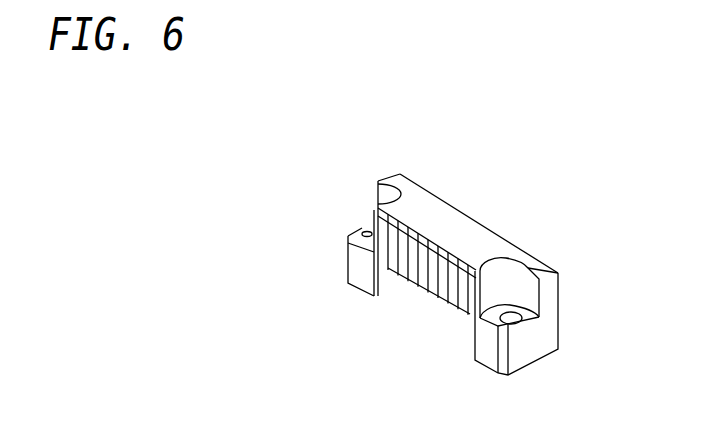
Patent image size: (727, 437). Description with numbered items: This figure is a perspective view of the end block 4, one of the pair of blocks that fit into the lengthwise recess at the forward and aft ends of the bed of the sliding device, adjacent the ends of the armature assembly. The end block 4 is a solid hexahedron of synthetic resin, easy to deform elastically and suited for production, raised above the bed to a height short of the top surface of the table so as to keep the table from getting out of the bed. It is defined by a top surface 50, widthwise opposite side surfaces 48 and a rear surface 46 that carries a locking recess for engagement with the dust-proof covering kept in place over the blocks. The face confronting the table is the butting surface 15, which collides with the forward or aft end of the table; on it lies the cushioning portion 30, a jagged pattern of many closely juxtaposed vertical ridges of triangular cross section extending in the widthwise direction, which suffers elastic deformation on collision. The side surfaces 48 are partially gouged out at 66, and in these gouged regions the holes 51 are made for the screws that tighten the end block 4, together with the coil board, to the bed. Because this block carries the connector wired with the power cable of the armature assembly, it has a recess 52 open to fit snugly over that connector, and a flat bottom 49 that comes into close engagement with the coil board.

The end block 4 is at (454, 245).
The butting surface 15 is at (434, 262).
The cushioning portion 30 is at (434, 262).
The rear surface 46 is at (445, 284).
The side surface 48 is at (532, 340).
The flat bottom 49 is at (357, 290).
The top surface 50 is at (478, 240).
The hole 51 is at (362, 231).
The recess 52 is at (408, 296).
The gouged-out portion 66 is at (378, 188).